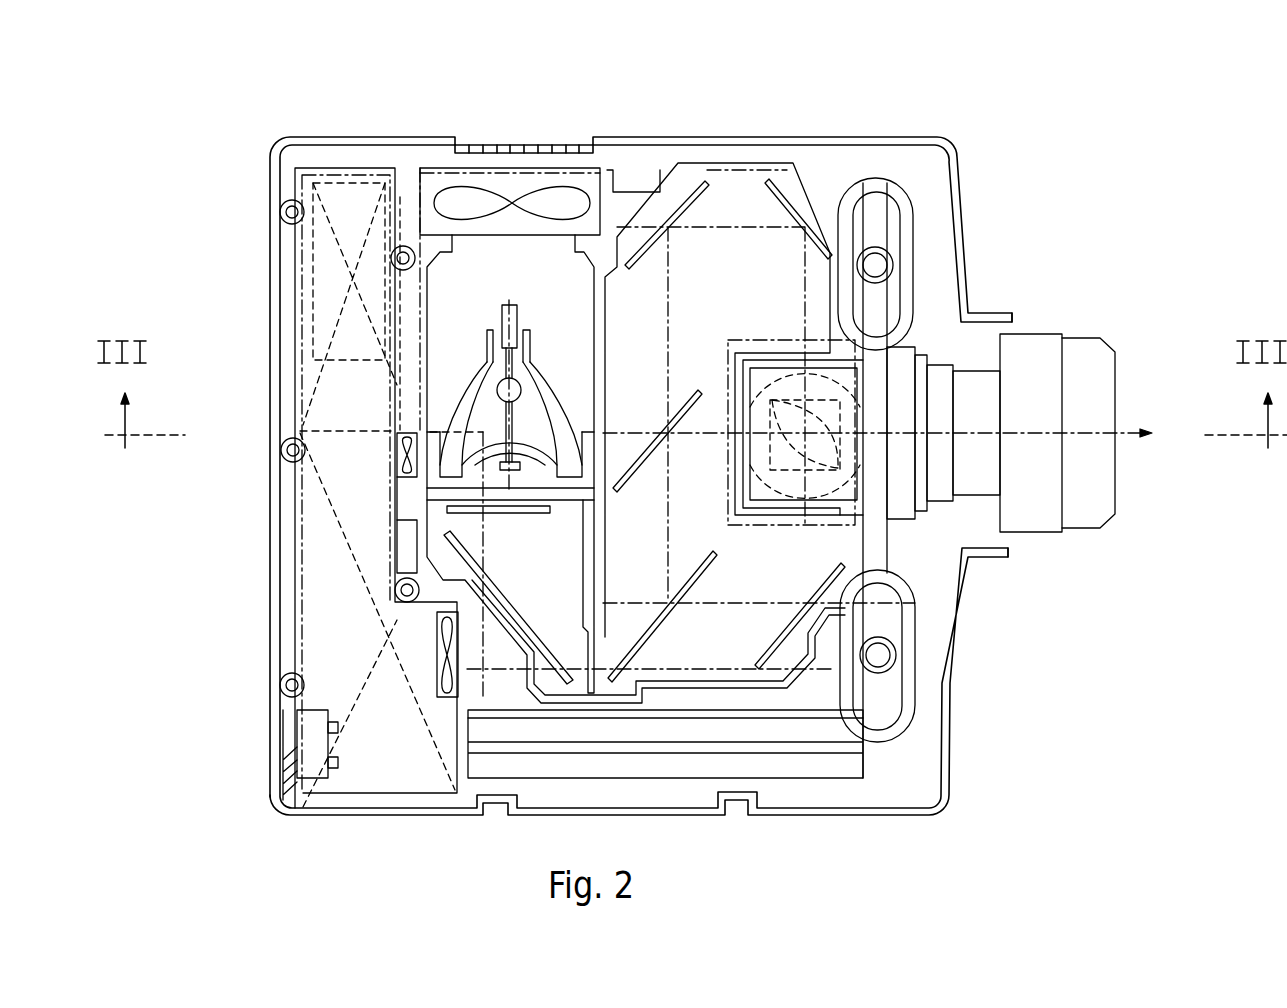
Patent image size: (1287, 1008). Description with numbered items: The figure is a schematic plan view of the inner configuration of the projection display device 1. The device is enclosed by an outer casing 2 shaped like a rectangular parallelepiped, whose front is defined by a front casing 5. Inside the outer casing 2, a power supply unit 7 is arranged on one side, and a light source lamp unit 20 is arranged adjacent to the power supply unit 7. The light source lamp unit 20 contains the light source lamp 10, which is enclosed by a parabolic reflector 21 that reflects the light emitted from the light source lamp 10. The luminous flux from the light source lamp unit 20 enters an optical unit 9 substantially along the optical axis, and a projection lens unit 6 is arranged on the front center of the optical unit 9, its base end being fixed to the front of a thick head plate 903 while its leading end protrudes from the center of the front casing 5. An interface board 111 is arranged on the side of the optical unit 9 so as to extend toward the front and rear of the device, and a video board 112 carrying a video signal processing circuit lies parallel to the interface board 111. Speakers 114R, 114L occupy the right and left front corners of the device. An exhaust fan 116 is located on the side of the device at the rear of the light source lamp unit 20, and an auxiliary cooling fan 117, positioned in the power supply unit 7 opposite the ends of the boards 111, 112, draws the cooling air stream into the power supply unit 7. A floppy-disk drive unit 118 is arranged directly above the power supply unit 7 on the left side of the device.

The projection display device 1 is at (960, 144).
The outer casing 2 is at (270, 257).
The front casing 5 is at (950, 683).
The projection lens unit 6 is at (1062, 323).
The power supply unit 7 is at (342, 636).
The optical unit 9 is at (770, 166).
The light source lamp 10 is at (522, 384).
The light source lamp unit 20 is at (577, 272).
The parabolic reflector 21 is at (563, 392).
The interface board 111 is at (818, 767).
The video board 112 is at (677, 718).
The speaker 114R is at (914, 203).
The speaker 114L is at (905, 728).
The exhaust fan 116 is at (443, 187).
The auxiliary cooling fan 117 is at (397, 457).
The floppy-disk drive unit 118 is at (323, 539).
The head plate 903 is at (883, 553).